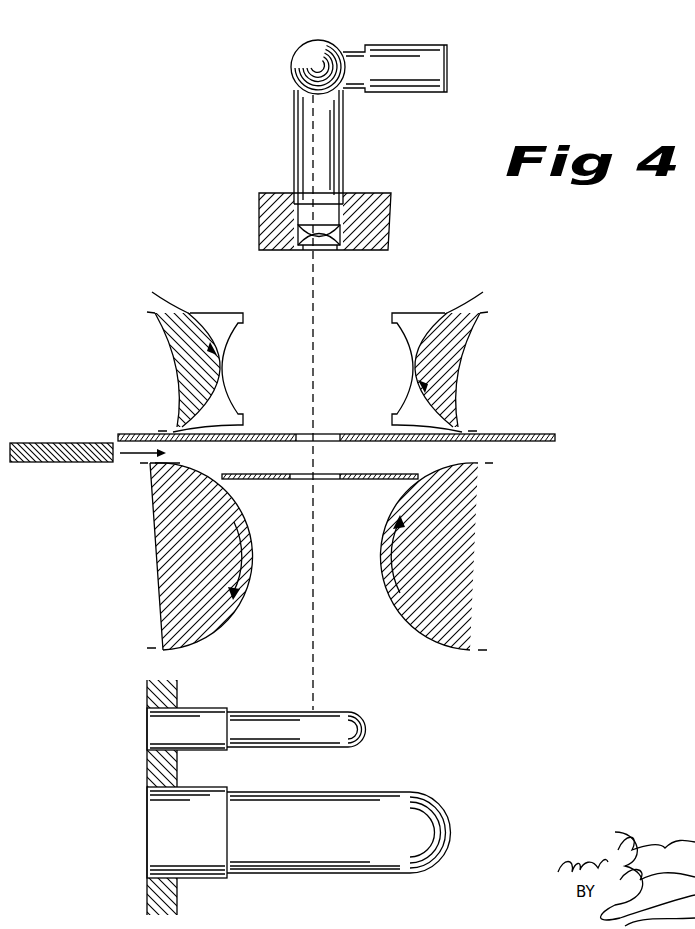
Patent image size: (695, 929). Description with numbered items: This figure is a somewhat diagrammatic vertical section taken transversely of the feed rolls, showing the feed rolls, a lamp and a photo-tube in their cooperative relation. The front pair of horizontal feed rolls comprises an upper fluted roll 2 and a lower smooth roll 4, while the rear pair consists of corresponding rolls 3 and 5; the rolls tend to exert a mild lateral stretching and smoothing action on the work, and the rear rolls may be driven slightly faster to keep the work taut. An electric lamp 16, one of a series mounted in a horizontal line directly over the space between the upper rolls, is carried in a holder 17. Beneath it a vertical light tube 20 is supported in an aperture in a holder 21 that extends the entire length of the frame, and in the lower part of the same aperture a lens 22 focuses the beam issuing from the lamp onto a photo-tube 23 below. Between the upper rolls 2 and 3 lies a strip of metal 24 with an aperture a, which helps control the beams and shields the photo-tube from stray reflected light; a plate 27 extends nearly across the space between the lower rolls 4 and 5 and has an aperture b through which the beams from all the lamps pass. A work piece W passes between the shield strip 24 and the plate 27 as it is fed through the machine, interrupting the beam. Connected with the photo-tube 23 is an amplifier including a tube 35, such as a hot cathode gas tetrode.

The electric lamp 16 is at (298, 52).
The holder 17 is at (408, 46).
The vertical light tube 20 is at (333, 158).
The holder 21 is at (372, 195).
The lens 22 is at (318, 246).
The upper fluted roll 2 is at (218, 312).
The upper fluted roll 3 is at (447, 314).
The lower smooth roll 4 is at (222, 615).
The lower roll 5 is at (393, 612).
The strip of metal 24 is at (348, 433).
The aperture a is at (302, 433).
The plate 27 is at (367, 480).
The aperture b is at (303, 480).
The work piece W is at (38, 443).
The photo-tube 23 is at (345, 715).
The amplifier tube 35 is at (420, 795).